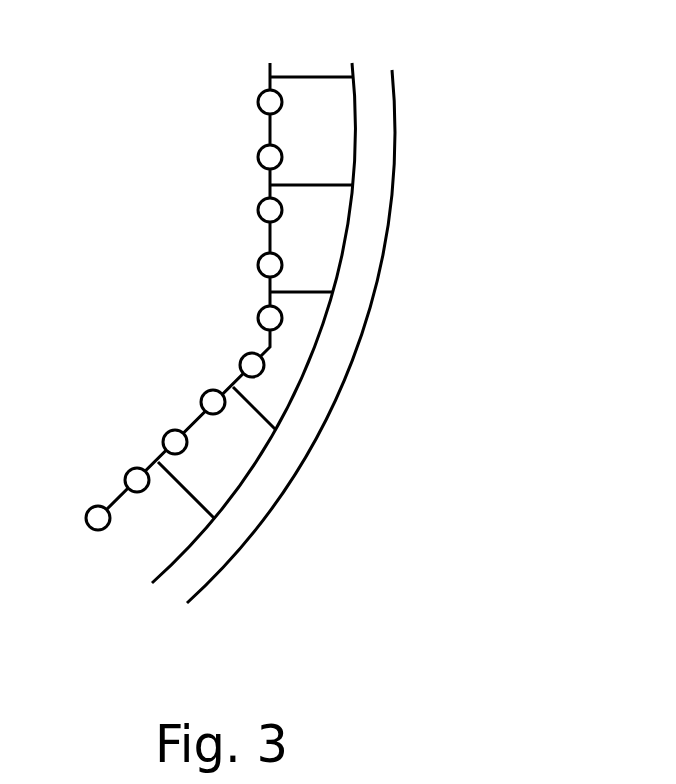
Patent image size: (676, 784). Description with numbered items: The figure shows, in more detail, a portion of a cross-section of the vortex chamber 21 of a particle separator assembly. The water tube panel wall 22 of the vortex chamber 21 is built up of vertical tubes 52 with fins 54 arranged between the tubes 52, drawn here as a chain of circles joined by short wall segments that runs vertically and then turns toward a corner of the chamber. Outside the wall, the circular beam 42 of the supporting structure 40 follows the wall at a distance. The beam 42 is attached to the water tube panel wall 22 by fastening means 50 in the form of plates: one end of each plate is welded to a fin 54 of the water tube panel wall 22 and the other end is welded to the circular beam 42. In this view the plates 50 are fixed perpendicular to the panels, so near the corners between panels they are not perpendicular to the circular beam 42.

The vortex chamber 21 is at (78, 232).
The water tube panel wall 22 is at (163, 296).
The supporting structure 40 is at (380, 313).
The circular beam 42 is at (373, 253).
The fastening means 50 is at (312, 75).
The vertical tubes 52 is at (266, 156).
The fins 54 is at (268, 122).